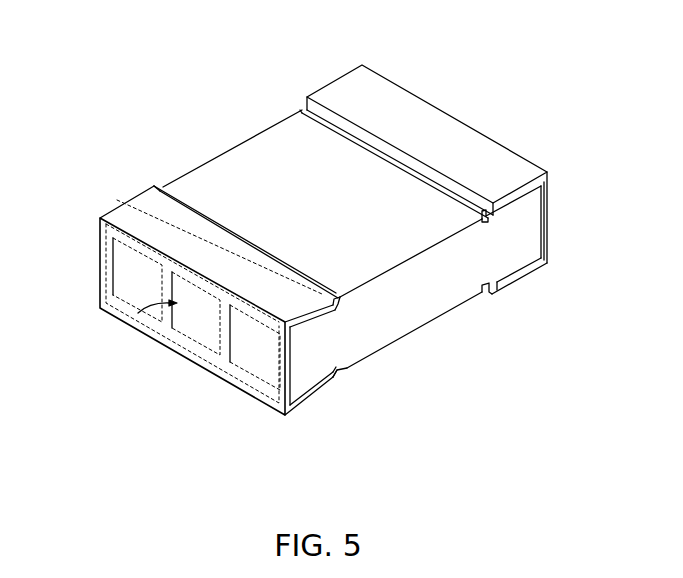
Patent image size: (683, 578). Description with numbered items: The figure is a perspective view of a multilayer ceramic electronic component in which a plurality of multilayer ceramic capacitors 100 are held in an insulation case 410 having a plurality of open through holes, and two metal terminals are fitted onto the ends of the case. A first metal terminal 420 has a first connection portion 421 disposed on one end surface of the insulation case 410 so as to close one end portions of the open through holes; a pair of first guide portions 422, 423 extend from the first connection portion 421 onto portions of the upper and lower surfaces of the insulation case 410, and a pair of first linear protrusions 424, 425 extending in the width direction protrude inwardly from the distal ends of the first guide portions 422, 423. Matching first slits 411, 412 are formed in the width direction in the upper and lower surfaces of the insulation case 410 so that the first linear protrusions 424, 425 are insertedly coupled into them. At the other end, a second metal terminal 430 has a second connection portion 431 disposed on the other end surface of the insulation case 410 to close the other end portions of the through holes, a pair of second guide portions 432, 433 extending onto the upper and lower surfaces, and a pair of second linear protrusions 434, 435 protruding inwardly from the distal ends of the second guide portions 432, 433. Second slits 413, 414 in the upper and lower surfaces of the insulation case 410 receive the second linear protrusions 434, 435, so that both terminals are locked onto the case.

The multilayer ceramic capacitor 100 is at (138, 313).
The insulation case 410 is at (355, 232).
The first slit 411 is at (340, 273).
The first slit 412 is at (346, 373).
The second slit 413 is at (301, 108).
The second slit 414 is at (488, 295).
The first metal terminal 420 is at (239, 308).
The first connection portion 421 is at (107, 266).
The first guide portion 422 is at (122, 207).
The first guide portion 423 is at (305, 404).
The first linear protrusion 424 is at (343, 299).
The first linear protrusion 425 is at (342, 379).
The second metal terminal 430 is at (471, 186).
The second connection portion 431 is at (548, 197).
The second guide portion 432 is at (343, 90).
The second guide portion 433 is at (543, 270).
The second linear protrusion 434 is at (500, 211).
The second linear protrusion 435 is at (500, 285).